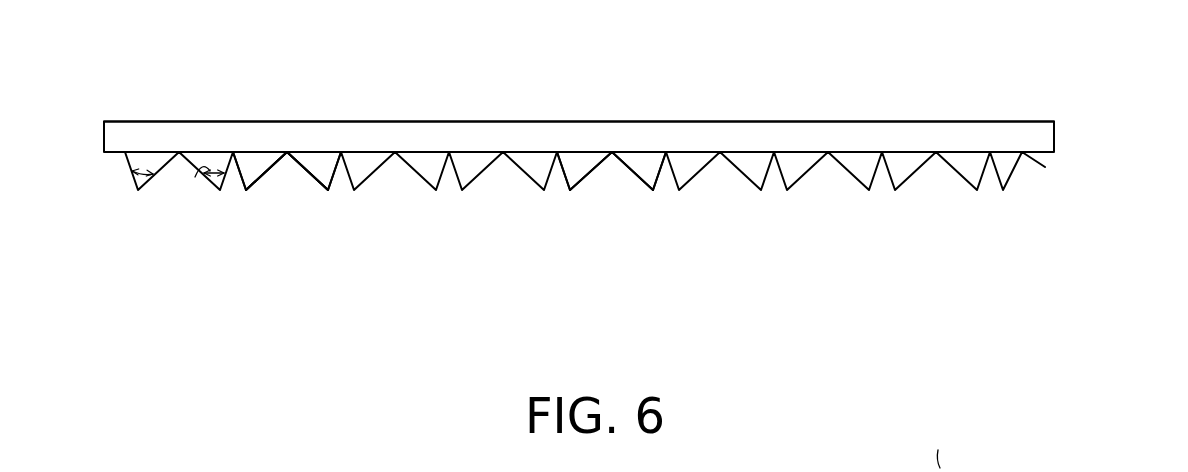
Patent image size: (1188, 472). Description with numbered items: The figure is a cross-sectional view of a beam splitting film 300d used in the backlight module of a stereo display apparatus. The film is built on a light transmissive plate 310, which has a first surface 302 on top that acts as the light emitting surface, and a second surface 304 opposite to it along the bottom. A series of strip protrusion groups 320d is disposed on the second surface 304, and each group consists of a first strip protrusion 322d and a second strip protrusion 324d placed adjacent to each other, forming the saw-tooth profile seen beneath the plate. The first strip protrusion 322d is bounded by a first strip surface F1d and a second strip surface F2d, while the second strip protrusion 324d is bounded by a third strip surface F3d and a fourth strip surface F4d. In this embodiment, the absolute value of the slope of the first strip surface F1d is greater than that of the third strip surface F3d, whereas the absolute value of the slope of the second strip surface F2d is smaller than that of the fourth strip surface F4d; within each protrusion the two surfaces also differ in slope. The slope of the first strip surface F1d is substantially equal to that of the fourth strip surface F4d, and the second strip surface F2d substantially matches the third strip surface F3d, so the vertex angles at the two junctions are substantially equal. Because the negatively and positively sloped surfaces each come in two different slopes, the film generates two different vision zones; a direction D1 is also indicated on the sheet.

The beam splitting film 300d is at (634, 178).
The first surface 302 is at (941, 121).
The second surface 304 is at (1021, 155).
The light transmissive plate 310 is at (1000, 130).
The strip protrusion group 320d is at (368, 264).
The first strip protrusion 322d is at (256, 172).
The second strip protrusion 324d is at (318, 174).
The first strip surface F1d is at (567, 178).
The second strip surface F2d is at (592, 172).
The third strip surface F3d is at (645, 180).
The fourth strip surface F4d is at (661, 172).
The direction D1 is at (940, 439).